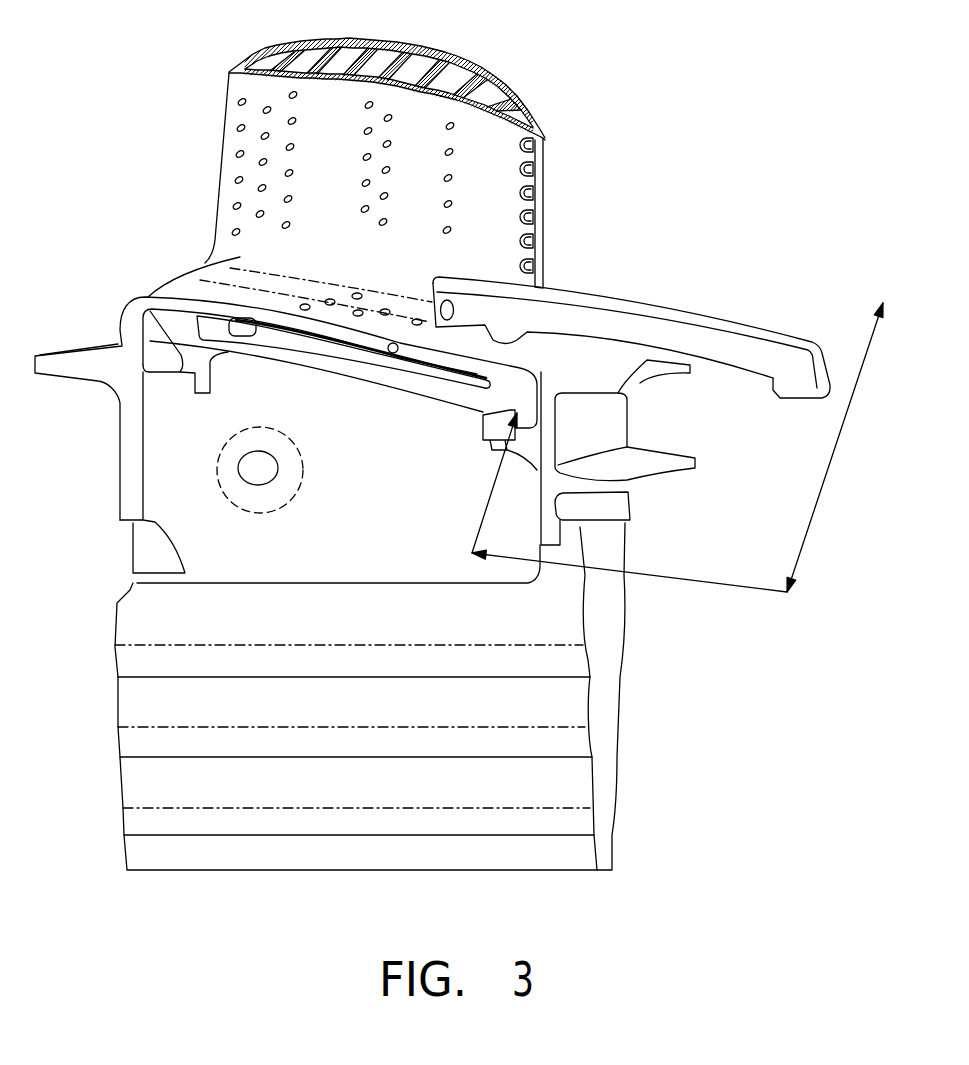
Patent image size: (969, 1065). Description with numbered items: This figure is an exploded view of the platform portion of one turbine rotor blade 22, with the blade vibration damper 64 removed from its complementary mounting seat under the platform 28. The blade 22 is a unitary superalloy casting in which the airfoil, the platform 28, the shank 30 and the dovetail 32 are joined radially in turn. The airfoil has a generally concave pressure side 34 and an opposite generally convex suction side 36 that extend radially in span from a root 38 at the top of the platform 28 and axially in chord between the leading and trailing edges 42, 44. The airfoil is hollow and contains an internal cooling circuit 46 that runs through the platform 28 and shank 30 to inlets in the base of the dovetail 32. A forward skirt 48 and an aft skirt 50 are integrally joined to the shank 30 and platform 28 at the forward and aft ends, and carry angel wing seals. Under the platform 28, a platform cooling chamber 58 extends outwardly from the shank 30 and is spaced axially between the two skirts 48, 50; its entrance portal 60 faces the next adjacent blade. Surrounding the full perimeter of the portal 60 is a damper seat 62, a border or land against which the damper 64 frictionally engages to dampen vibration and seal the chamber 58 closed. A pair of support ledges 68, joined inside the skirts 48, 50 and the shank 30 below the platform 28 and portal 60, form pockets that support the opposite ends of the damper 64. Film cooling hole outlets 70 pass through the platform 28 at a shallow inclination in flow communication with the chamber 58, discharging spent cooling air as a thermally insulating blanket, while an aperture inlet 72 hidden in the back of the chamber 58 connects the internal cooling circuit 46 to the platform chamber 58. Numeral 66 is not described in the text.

The turbine rotor blade 22 is at (605, 92).
The platform 28 is at (178, 297).
The shank 30 is at (378, 546).
The dovetail 32 is at (320, 711).
The pressure side 34 is at (343, 80).
The suction side 36 is at (427, 45).
The root 38 is at (227, 272).
The leading edge 42 is at (229, 71).
The trailing edge 44 is at (540, 188).
The internal cooling circuit 46 is at (310, 47).
The forward skirt 48 is at (118, 462).
The aft skirt 50 is at (627, 417).
The platform cooling chamber 58 is at (318, 352).
The portal 60 is at (348, 363).
The damper seat 62 is at (178, 321).
The vibration damper 64 is at (713, 313).
The seal slot 66 is at (368, 348).
The support ledges 68 is at (193, 403).
The film cooling hole outlets 70 is at (333, 295).
The aperture inlet 72 is at (388, 349).